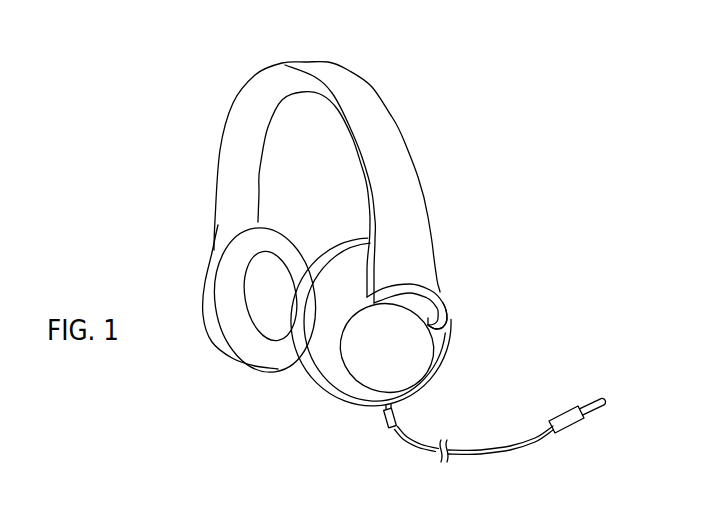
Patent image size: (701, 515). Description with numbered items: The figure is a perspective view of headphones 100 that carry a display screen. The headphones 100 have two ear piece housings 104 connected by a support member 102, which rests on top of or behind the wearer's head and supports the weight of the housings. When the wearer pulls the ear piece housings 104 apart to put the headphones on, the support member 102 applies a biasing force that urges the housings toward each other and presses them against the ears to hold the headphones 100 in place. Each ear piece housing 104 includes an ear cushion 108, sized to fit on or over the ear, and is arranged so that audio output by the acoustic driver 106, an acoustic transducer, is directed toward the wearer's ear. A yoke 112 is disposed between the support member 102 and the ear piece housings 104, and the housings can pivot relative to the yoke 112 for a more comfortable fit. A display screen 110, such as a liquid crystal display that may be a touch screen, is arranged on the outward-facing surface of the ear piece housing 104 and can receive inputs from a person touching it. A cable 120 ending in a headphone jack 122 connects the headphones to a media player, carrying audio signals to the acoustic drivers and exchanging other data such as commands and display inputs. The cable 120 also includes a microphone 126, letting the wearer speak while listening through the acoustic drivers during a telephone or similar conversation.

The headphones 100 is at (446, 52).
The support member 102 is at (403, 178).
The ear piece housings 104 is at (198, 264).
The acoustic driver 106 is at (263, 285).
The ear cushion 108 is at (345, 257).
The display screen 110 is at (406, 356).
The yoke 112 is at (445, 308).
The cable 120 is at (406, 444).
The headphone jack 122 is at (556, 419).
The microphone 126 is at (398, 418).